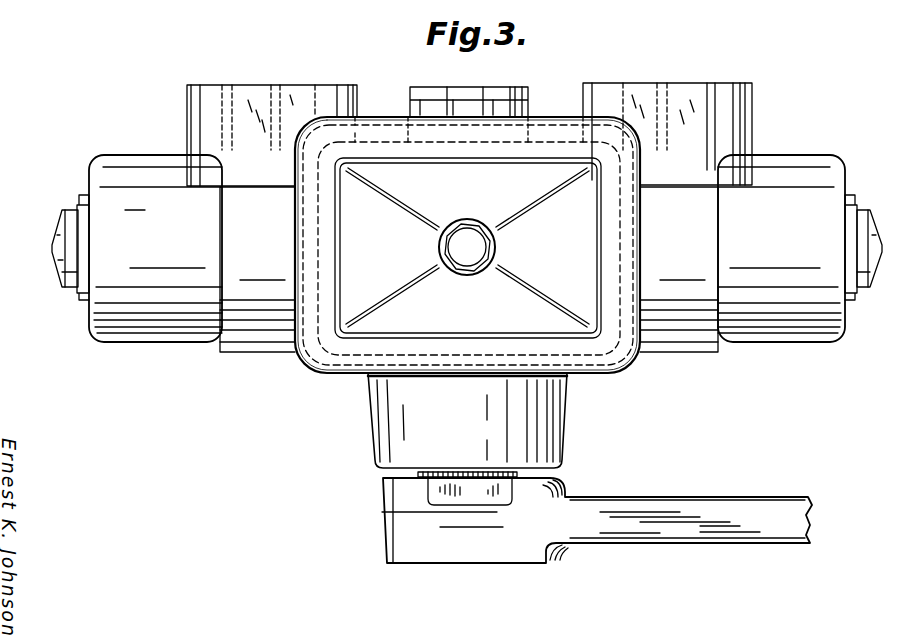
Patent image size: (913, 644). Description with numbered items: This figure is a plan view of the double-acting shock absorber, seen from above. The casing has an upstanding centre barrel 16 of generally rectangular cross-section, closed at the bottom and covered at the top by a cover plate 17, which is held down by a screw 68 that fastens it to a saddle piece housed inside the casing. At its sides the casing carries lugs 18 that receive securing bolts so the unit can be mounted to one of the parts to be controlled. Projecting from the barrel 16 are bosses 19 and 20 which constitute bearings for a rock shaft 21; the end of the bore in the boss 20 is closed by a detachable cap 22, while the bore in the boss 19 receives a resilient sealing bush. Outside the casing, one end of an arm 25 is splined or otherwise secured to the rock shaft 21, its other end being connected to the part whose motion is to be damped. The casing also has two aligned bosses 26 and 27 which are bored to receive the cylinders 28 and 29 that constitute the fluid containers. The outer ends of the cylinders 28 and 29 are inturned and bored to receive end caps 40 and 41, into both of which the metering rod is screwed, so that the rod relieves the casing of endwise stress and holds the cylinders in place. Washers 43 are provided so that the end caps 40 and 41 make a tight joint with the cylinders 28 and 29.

The centre barrel 16 is at (342, 373).
The cover plate 17 is at (600, 343).
The lugs 18 is at (213, 90).
The boss 19 is at (562, 440).
The boss 20 is at (528, 117).
The rock shaft 21 is at (540, 475).
The detachable cap 22 is at (455, 88).
The arm 25 is at (728, 507).
The boss 26 is at (251, 353).
The boss 27 is at (700, 353).
The cylinder 28 is at (155, 343).
The cylinder 29 is at (790, 340).
The end cap 40 is at (62, 228).
The end cap 41 is at (862, 272).
The washers 43 is at (87, 200).
The screw 68 is at (466, 245).